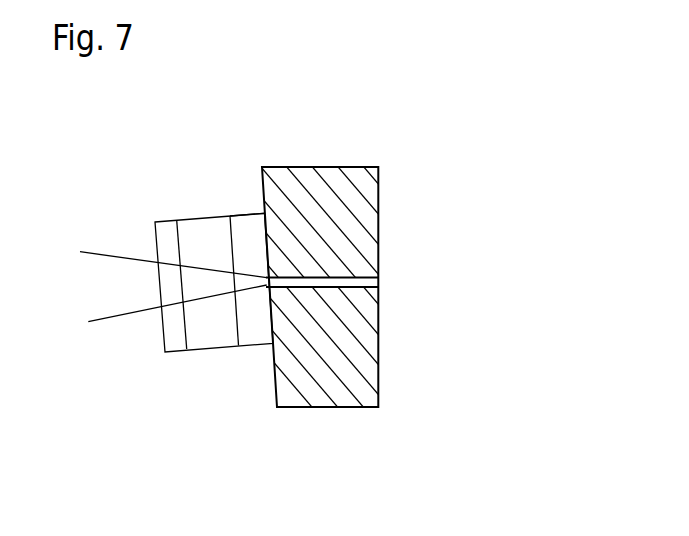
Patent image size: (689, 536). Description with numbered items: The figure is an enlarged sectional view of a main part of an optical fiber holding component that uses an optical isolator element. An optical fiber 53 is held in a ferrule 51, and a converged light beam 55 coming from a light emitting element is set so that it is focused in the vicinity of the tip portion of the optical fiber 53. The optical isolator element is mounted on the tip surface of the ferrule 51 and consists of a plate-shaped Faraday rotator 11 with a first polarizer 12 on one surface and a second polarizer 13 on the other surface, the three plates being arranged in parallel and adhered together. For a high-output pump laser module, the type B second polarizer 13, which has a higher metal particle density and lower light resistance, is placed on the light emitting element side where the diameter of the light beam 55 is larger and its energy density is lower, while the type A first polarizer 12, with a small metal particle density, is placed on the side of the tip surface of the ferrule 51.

The ferrule 51 is at (330, 202).
The optical fiber 53 is at (315, 288).
The converged light beam 55 is at (135, 313).
The Faraday rotator 11 is at (200, 230).
The first polarizer 12 is at (242, 223).
The second polarizer 13 is at (152, 222).